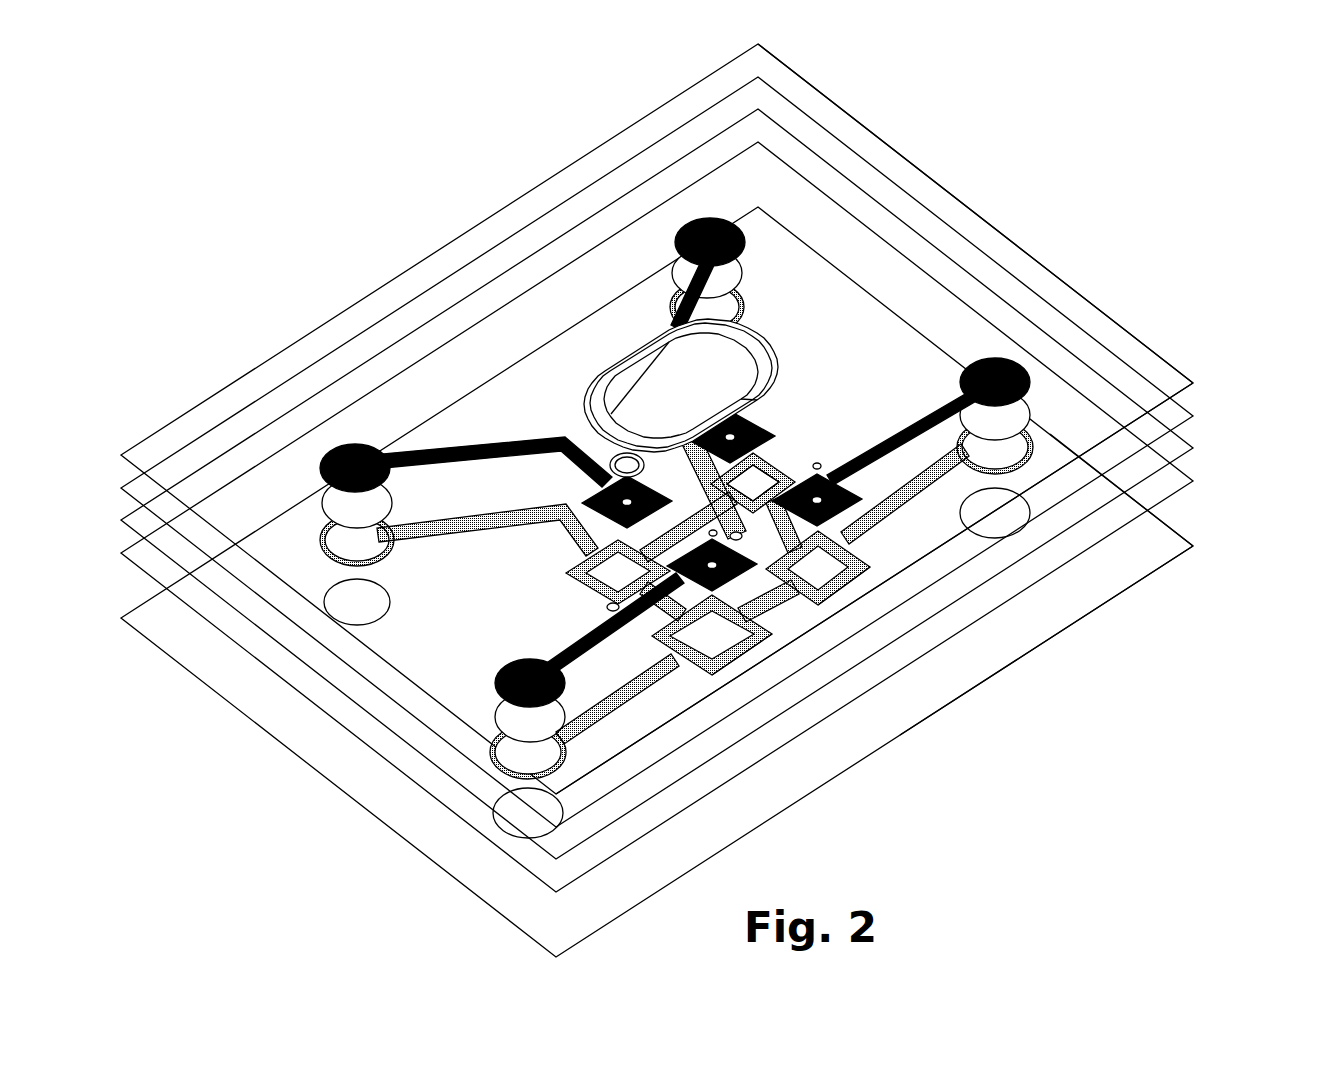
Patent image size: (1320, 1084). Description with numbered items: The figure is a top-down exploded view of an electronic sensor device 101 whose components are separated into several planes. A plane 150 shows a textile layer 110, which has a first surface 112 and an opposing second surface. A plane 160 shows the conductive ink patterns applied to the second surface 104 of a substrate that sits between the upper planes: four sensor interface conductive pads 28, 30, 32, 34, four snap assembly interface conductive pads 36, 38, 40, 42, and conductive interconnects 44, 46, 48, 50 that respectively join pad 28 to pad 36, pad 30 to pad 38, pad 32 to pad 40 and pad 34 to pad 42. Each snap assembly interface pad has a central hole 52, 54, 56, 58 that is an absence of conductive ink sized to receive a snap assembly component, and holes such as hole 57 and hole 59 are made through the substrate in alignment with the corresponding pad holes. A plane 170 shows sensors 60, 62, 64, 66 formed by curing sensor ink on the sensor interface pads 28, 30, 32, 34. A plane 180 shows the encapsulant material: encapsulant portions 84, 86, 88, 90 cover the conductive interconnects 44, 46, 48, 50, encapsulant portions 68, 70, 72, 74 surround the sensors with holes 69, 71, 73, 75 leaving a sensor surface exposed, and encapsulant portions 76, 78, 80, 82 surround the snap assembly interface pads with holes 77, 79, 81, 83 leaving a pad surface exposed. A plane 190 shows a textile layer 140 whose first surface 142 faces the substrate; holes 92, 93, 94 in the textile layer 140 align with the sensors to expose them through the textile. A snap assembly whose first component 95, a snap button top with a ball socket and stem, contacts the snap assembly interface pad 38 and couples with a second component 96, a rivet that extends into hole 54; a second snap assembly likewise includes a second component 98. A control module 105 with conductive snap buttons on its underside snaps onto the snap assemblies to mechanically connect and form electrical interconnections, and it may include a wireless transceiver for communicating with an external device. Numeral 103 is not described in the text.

The electronic sensor device 101 is at (705, 500).
The textile layer 110 is at (1155, 352).
The first surface 112 is at (1078, 306).
The plane 150 is at (1195, 386).
The plane 160 is at (1195, 418).
The plane 170 is at (1195, 451).
The plane 180 is at (1195, 484).
The plane 190 is at (1195, 547).
The textile layer 140 is at (1152, 560).
The first surface 142 is at (1022, 643).
The sensor interface conductive pad 28 is at (710, 228).
The sensor interface conductive pad 30 is at (370, 446).
The sensor interface conductive pad 32 is at (537, 660).
The sensor interface conductive pad 34 is at (978, 364).
The sensor 60 is at (744, 270).
The sensor 62 is at (390, 505).
The sensor 64 is at (500, 712).
The sensor 66 is at (1020, 407).
The encapsulant portion 68 is at (744, 300).
The hole 69 is at (740, 318).
The encapsulant portion 70 is at (322, 540).
The hole 71 is at (372, 538).
The encapsulant portion 72 is at (512, 752).
The hole 73 is at (500, 748).
The encapsulant portion 74 is at (1036, 445).
The hole 75 is at (958, 446).
The hole 92 is at (382, 612).
The hole 93 is at (518, 820).
The hole 94 is at (998, 522).
The conductive interconnect 44 is at (688, 303).
The conductive interconnect 46 is at (500, 450).
The conductive interconnect 48 is at (572, 656).
The conductive interconnect 50 is at (912, 428).
The encapsulant portion 86 is at (488, 528).
The encapsulant portion 88 is at (624, 700).
The encapsulant portion 90 is at (920, 512).
The snap assembly interface conductive pad 38 is at (600, 490).
The hole 52 is at (760, 430).
The snap assembly interface conductive pad 42 is at (855, 492).
The hole 56 is at (735, 582).
The hole 54 is at (620, 500).
The snap assembly interface conductive pad 36 is at (740, 432).
The hole 77 is at (813, 467).
The second component 98 is at (743, 537).
The second component 96 is at (600, 605).
The first component 95 is at (620, 456).
The encapsulant portion 76 is at (776, 456).
The encapsulant portion 78 is at (570, 580).
The encapsulant portion 80 is at (692, 660).
The encapsulant portion 82 is at (860, 560).
The hole 79 is at (580, 565).
The hole 58 is at (826, 577).
The snap assembly interface conductive pad 40 is at (745, 635).
The hole 59 is at (866, 445).
The lower pad opening edge 103 is at (753, 483).
The hole 81 is at (750, 648).
The hole 83 is at (848, 584).
The hole 57 is at (592, 376).
The second surface 104 is at (681, 385).
The control module 105 is at (665, 368).
The encapsulant portion 84 is at (682, 417).